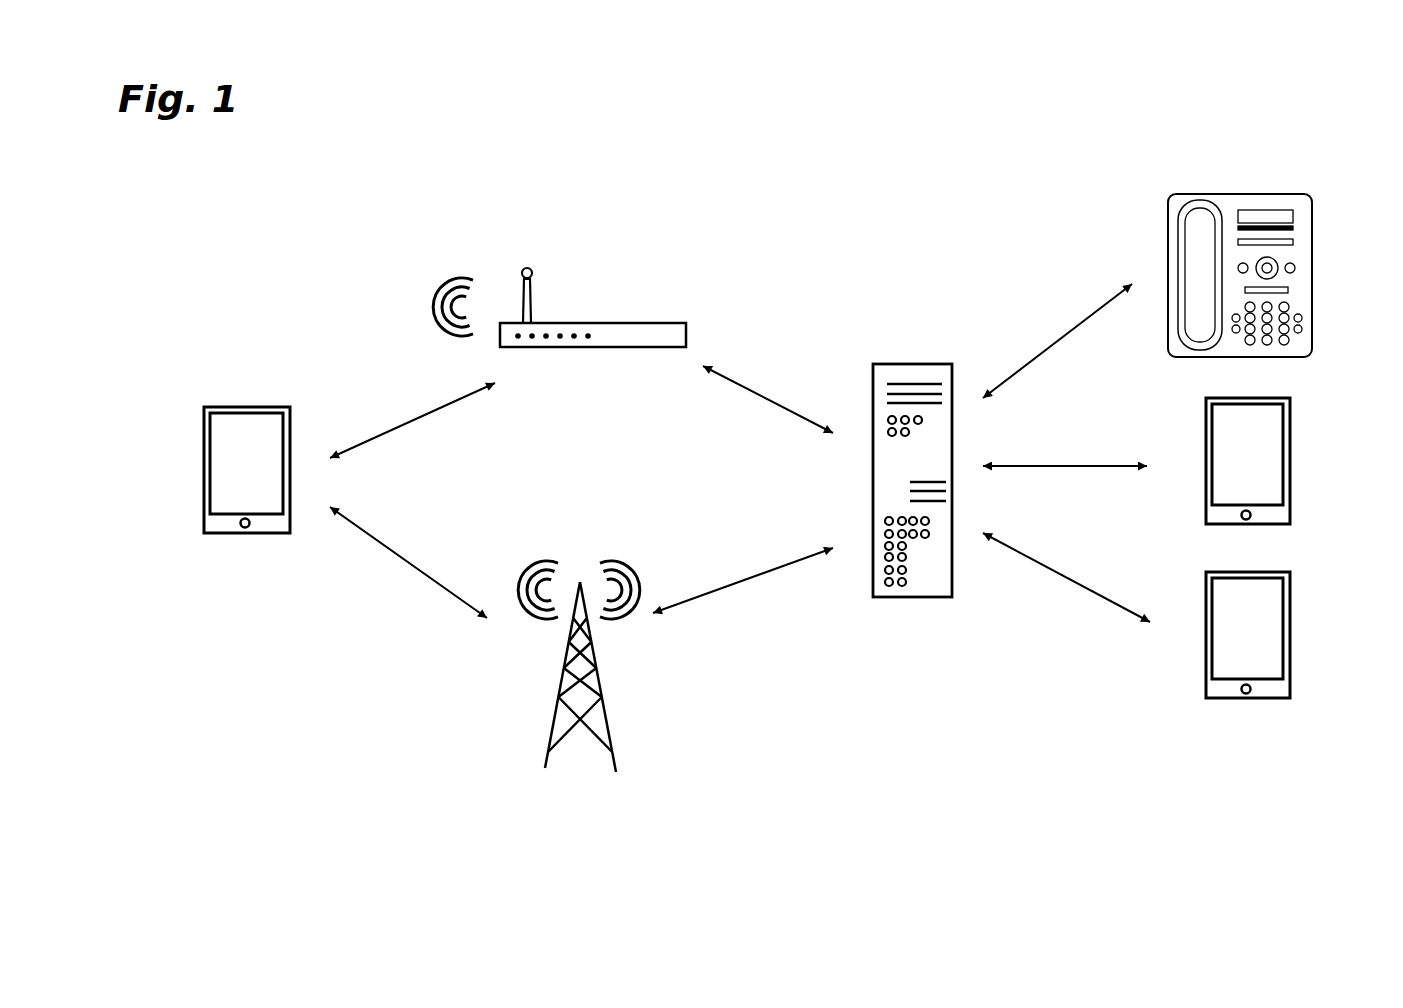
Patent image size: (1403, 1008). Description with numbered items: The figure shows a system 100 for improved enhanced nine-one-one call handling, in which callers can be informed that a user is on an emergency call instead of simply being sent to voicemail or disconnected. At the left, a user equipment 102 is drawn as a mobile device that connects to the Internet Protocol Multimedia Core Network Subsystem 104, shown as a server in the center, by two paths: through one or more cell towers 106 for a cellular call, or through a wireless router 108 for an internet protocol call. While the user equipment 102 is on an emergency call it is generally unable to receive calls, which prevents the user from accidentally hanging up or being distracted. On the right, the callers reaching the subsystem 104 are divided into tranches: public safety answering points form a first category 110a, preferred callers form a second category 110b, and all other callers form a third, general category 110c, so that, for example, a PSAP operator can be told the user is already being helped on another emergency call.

The system 100 is at (329, 232).
The user equipment 102 is at (202, 457).
The Internet Protocol Multimedia Core Network Subsystem 104 is at (883, 364).
The cell tower 106 is at (613, 768).
The wireless router 108 is at (587, 323).
The first category 110a is at (1313, 292).
The second category 110b is at (1291, 464).
The third category 110c is at (1291, 637).